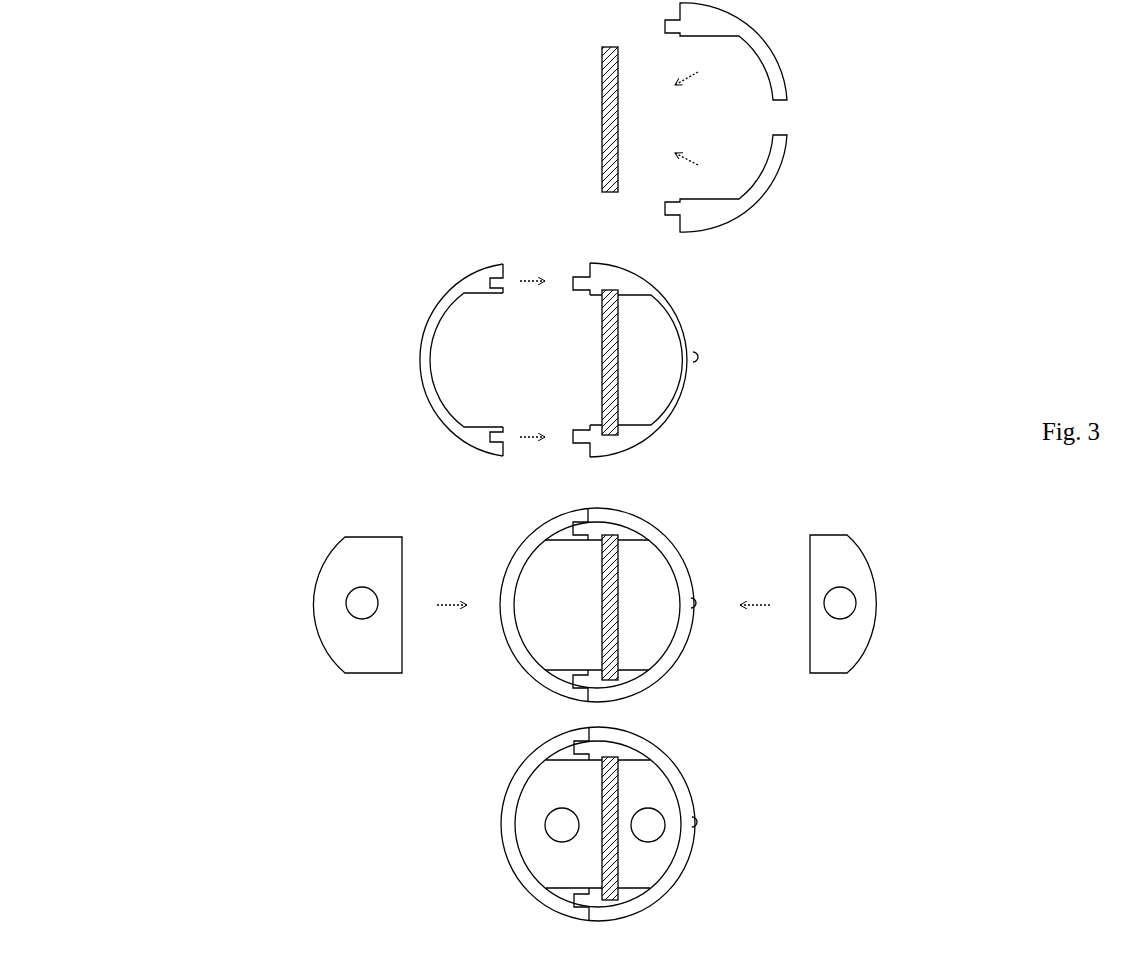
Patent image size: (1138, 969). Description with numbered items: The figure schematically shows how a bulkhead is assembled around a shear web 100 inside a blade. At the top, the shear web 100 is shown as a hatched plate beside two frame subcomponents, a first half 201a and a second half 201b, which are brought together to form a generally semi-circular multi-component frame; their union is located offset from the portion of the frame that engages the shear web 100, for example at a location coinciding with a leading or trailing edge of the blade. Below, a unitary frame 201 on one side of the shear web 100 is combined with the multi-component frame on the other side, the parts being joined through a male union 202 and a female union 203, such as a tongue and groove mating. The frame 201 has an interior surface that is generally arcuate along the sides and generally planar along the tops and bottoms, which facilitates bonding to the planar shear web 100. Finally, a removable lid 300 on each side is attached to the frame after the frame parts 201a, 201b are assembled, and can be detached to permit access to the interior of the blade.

The shear web 100 is at (600, 158).
The frame 201 is at (420, 321).
The first half 201a is at (772, 47).
The second half 201b is at (785, 180).
The male union 202 is at (577, 278).
The female union 203 is at (503, 278).
The removable lid 300 is at (317, 562).